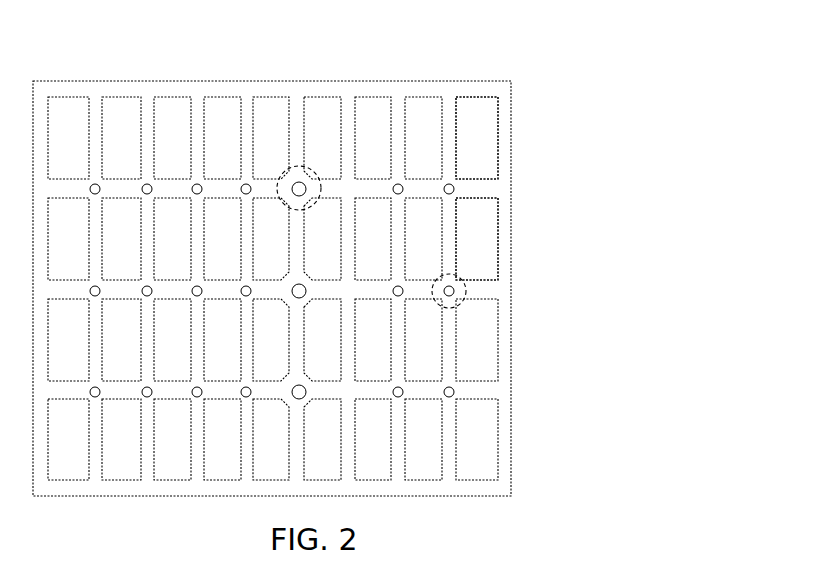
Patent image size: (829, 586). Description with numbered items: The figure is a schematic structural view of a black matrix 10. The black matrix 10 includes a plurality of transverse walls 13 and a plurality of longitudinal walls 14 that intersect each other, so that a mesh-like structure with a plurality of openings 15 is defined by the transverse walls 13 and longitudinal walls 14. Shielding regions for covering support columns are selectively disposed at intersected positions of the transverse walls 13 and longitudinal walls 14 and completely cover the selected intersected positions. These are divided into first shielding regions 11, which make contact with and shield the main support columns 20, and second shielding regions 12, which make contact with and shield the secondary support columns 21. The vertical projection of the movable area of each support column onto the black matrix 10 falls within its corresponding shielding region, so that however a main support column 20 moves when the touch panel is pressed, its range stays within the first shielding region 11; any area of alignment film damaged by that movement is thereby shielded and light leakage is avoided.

The black matrix 10 is at (505, 88).
The first shielding region 11 is at (294, 182).
The second shielding region 12 is at (452, 296).
The transverse wall 13 is at (478, 187).
The longitudinal wall 14 is at (448, 137).
The opening 15 is at (483, 233).
The main support column 20 is at (294, 168).
The secondary support column 21 is at (466, 291).